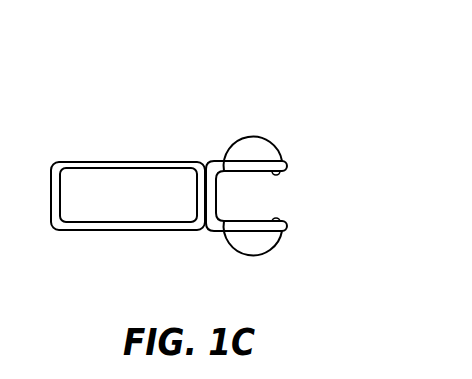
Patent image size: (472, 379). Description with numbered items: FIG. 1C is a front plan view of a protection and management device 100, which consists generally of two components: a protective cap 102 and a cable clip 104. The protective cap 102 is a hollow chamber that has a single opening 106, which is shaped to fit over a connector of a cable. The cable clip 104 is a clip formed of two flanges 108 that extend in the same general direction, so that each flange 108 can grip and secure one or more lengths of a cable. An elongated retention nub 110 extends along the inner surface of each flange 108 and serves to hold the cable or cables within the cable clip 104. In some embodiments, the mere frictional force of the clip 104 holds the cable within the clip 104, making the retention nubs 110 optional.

The protection and management device 100 is at (340, 121).
The protective cap 102 is at (108, 160).
The cable clip 104 is at (290, 245).
The opening 106 is at (113, 208).
The flange 108 is at (247, 160).
The retention nub 110 is at (278, 218).